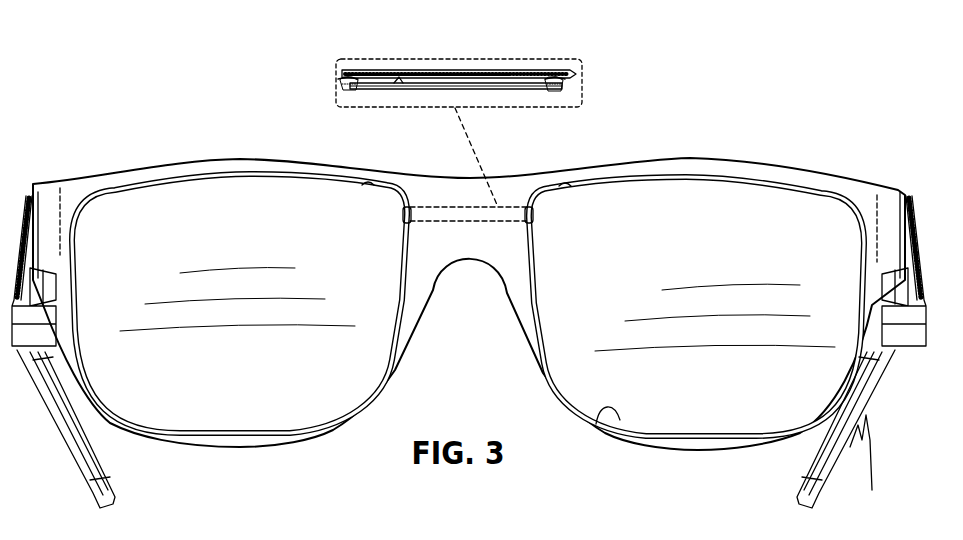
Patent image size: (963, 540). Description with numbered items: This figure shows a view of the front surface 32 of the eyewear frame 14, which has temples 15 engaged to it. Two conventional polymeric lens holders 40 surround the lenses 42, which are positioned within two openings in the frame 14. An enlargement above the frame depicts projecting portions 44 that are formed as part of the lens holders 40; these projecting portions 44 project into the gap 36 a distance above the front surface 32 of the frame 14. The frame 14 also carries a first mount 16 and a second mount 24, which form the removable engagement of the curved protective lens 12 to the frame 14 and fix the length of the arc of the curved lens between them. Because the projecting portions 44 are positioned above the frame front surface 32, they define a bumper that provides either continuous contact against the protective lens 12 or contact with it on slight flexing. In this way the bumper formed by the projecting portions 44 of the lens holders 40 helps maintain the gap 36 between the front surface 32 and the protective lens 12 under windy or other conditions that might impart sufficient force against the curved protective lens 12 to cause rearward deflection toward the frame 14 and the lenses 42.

The protective lens 12 is at (423, 72).
The eyewear frame 14 is at (725, 161).
The temples 15 is at (107, 465).
The first mount 16 is at (912, 195).
The second mount 24 is at (30, 200).
The front surface 32 is at (396, 83).
The gap 36 is at (508, 82).
The lens holders 40 is at (340, 92).
The lenses 42 is at (273, 383).
The projecting portions 44 is at (338, 80).